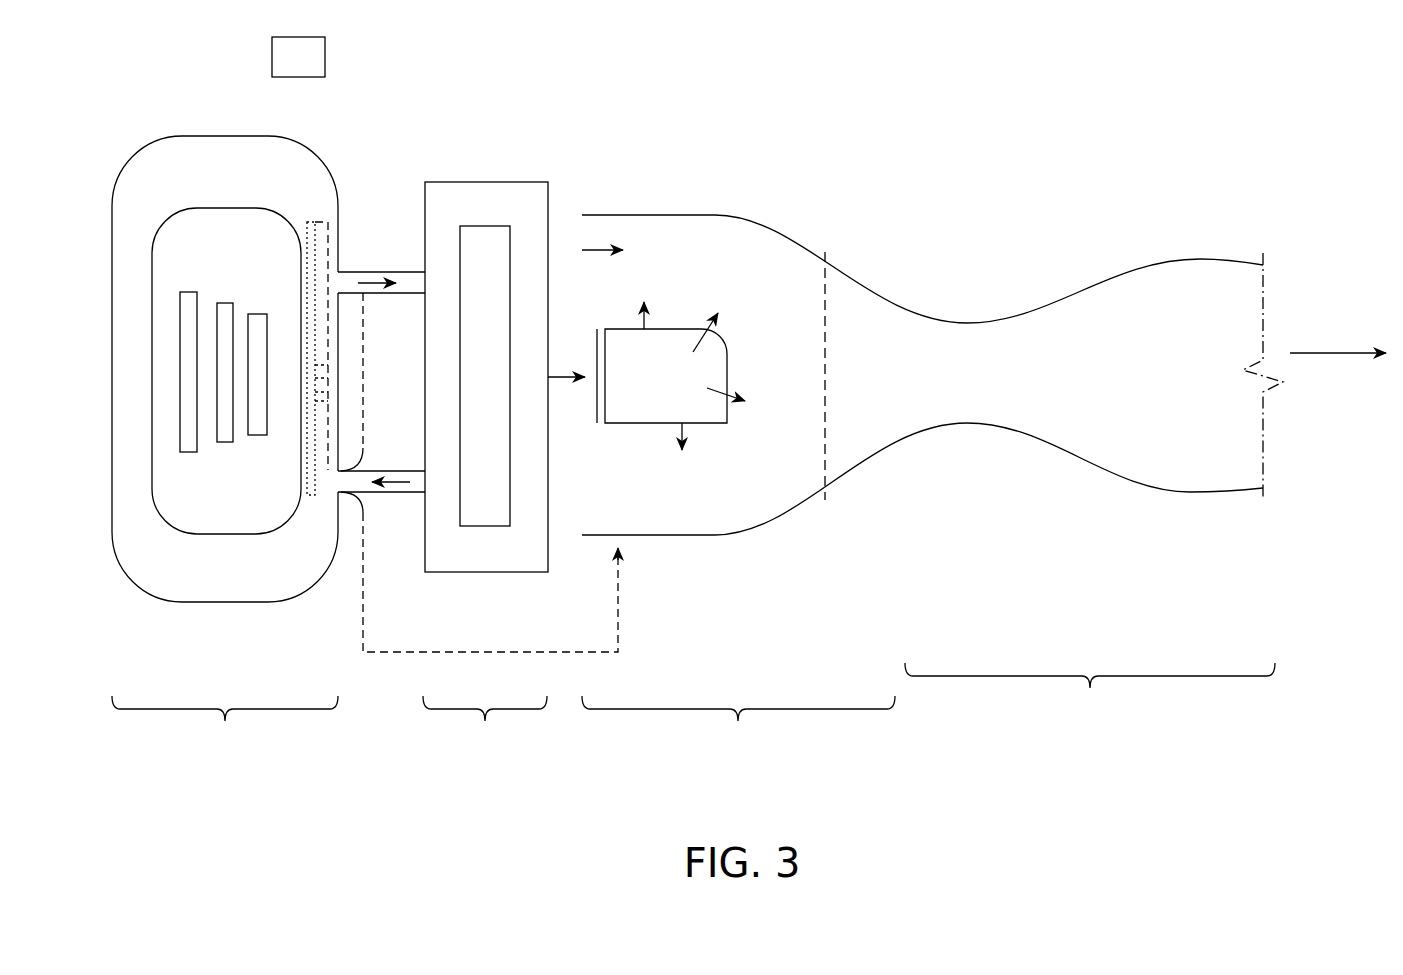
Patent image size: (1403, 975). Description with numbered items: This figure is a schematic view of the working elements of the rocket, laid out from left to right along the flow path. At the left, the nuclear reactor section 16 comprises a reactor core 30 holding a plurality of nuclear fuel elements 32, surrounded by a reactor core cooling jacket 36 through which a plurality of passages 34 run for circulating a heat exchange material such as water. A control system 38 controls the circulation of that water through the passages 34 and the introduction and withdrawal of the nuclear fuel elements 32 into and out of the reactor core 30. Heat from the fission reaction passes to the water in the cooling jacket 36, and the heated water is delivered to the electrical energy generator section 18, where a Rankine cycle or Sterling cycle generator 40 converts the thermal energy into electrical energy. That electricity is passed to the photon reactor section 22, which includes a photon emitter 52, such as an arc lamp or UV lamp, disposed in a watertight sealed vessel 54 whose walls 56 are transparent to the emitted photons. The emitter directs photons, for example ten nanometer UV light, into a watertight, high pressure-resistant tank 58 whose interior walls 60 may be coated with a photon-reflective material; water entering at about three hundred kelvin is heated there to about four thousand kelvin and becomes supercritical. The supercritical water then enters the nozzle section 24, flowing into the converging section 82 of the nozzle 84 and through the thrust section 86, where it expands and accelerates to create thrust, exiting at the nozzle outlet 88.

The nuclear reactor section 16 is at (225, 721).
The electrical energy generator section 18 is at (485, 721).
The photon reactor section 22 is at (738, 721).
The nozzle section 24 is at (1090, 688).
The reactor core 30 is at (146, 116).
The nuclear fuel elements 32 is at (217, 415).
The passages 34 is at (312, 222).
The reactor core cooling jacket 36 is at (218, 152).
The control system 38 is at (298, 57).
The Rankine cycle or Sterling cycle generator 40 is at (466, 200).
The photon emitter 52 is at (605, 378).
The watertight sealed vessel 54 is at (688, 329).
The walls 56 is at (722, 365).
The tank 58 is at (712, 535).
The interior walls 60 is at (748, 527).
The converging section 82 is at (907, 303).
The nozzle 84 is at (1047, 213).
The thrust section 86 is at (972, 425).
The nozzle exit 88 is at (1229, 253).